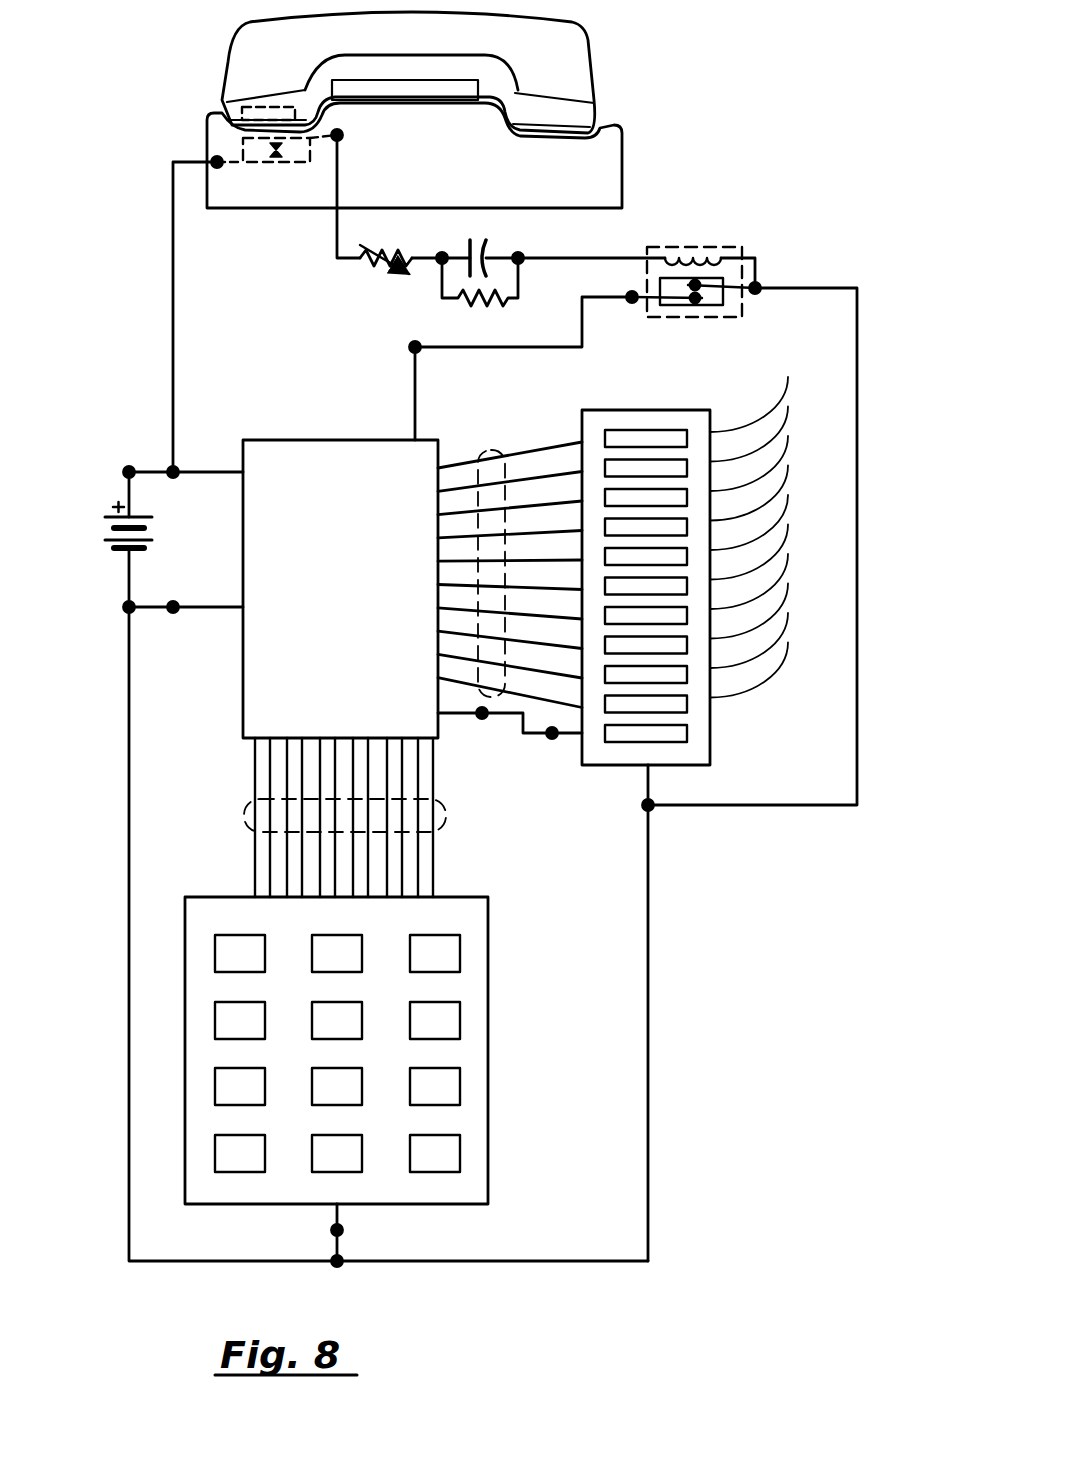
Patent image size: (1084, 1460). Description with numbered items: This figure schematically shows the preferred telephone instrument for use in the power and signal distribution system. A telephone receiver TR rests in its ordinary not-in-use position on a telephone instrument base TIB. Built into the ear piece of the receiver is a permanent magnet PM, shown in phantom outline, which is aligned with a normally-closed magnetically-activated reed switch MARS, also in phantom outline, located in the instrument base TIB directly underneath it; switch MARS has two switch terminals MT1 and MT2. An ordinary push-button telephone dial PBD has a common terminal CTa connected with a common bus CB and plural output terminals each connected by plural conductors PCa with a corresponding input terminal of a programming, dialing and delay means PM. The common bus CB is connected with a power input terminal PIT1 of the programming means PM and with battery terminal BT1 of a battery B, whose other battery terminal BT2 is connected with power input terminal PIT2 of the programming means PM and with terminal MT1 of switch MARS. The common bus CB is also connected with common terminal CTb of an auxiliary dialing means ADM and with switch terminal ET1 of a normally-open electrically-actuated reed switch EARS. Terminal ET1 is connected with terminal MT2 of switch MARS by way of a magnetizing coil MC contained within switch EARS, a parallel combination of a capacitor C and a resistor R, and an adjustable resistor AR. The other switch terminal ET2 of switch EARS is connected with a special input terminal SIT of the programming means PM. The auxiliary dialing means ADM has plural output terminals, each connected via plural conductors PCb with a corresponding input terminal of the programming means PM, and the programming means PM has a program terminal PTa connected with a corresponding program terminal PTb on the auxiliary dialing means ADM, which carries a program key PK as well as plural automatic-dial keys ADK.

The telephone receiver TR is at (601, 57).
The telephone instrument base TIB is at (264, 216).
The permanent magnet / programming, dialing and delay means PM is at (262, 106).
The magnetically-activated reed switch MARS is at (298, 165).
The switch terminal MT1 is at (214, 159).
The switch terminal MT2 is at (341, 135).
The common bus CB is at (860, 618).
The adjustable resistor AR is at (380, 280).
The capacitor C is at (484, 254).
The resistor R is at (488, 312).
The electrically-actuated reed switch EARS is at (703, 240).
The magnetizing coil MC is at (690, 256).
The switch terminal ET1 is at (758, 293).
The switch terminal ET2 is at (632, 303).
The special input terminal SIT is at (410, 348).
The battery B is at (106, 515).
The battery terminal BT2 is at (130, 467).
The power input terminal PIT2 is at (175, 467).
The battery terminal BT1 is at (125, 610).
The power input terminal PIT1 is at (175, 611).
The plural conductors PCb is at (498, 450).
The auxiliary dialing means ADM is at (710, 774).
The program key PK is at (690, 735).
The automatic-dial keys ADK is at (789, 378).
The program terminal PTa is at (485, 720).
The program terminal PTb is at (550, 739).
The common terminal CTb is at (652, 809).
The plural conductors PCa is at (444, 828).
The push-button telephone dial PBD is at (497, 1009).
The common terminal CTa is at (344, 1230).